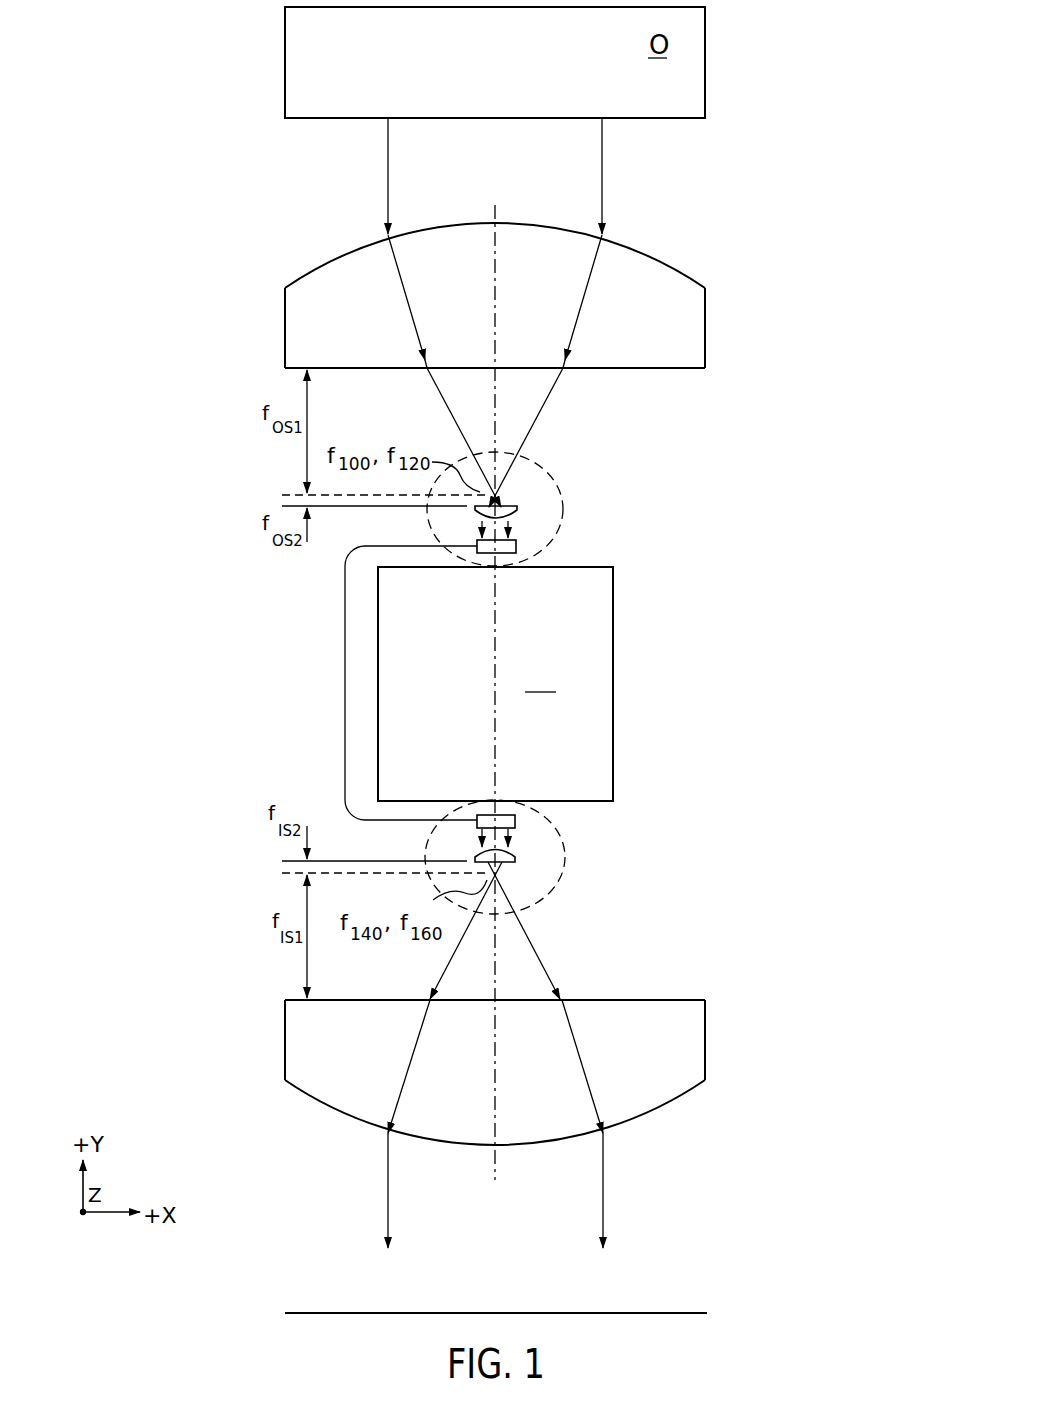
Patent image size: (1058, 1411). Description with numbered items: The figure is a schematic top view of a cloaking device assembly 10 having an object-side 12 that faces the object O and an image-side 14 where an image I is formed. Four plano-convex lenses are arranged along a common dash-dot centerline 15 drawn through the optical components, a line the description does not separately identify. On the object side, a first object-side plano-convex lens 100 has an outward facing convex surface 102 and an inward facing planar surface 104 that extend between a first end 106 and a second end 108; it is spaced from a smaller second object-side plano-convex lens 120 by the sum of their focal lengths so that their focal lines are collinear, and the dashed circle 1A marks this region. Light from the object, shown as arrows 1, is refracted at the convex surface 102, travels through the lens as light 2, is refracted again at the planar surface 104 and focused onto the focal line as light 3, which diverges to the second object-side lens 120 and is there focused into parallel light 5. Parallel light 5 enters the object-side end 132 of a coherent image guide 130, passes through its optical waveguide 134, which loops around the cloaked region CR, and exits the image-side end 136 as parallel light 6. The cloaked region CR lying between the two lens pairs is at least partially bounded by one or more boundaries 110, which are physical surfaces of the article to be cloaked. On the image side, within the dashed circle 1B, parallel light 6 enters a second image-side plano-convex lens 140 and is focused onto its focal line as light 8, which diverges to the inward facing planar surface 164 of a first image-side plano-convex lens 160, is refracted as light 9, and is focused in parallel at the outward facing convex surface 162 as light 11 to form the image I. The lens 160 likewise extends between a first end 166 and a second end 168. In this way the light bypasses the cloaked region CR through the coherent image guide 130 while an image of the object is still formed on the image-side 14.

The light from object 1 is at (388, 165).
The light propagating through first object-side plano-convex lens 2 is at (410, 310).
The light propagating to second object-side plano-convex lens 3 is at (448, 398).
The parallel light 5 is at (478, 530).
The parallel light 6 is at (480, 833).
The light propagating to first image-side plano-convex lens 8 is at (440, 975).
The light propagating through first image-side plano-convex lens 9 is at (411, 1048).
The parallel light 11 is at (388, 1205).
The cloaking device assembly 10 is at (757, 87).
The object-side 12 is at (747, 165).
The image-side 14 is at (835, 1219).
The optical axis 15 is at (495, 212).
The first object-side plano-convex lens 100 is at (492, 309).
The outward facing convex surface 102 is at (637, 240).
The inward facing planar surface 104 is at (643, 370).
The first end 106 is at (705, 315).
The second end 108 is at (285, 315).
The boundary 110 is at (445, 568).
The second object-side plano-convex lens 120 is at (546, 480).
The coherent image guide 130 is at (451, 680).
The object-side end 132 is at (516, 546).
The optical waveguide 134 is at (345, 628).
The image-side end 136 is at (517, 818).
The second image-side plano-convex lens 140 is at (544, 892).
The first image-side plano-convex lens 160 is at (493, 1073).
The outward facing convex surface 162 is at (673, 1115).
The inward facing planar surface 164 is at (640, 1000).
The first end 166 is at (705, 1032).
The second end 168 is at (285, 1042).
The object-side detail region 1A is at (563, 508).
The image-side detail region 1B is at (565, 857).